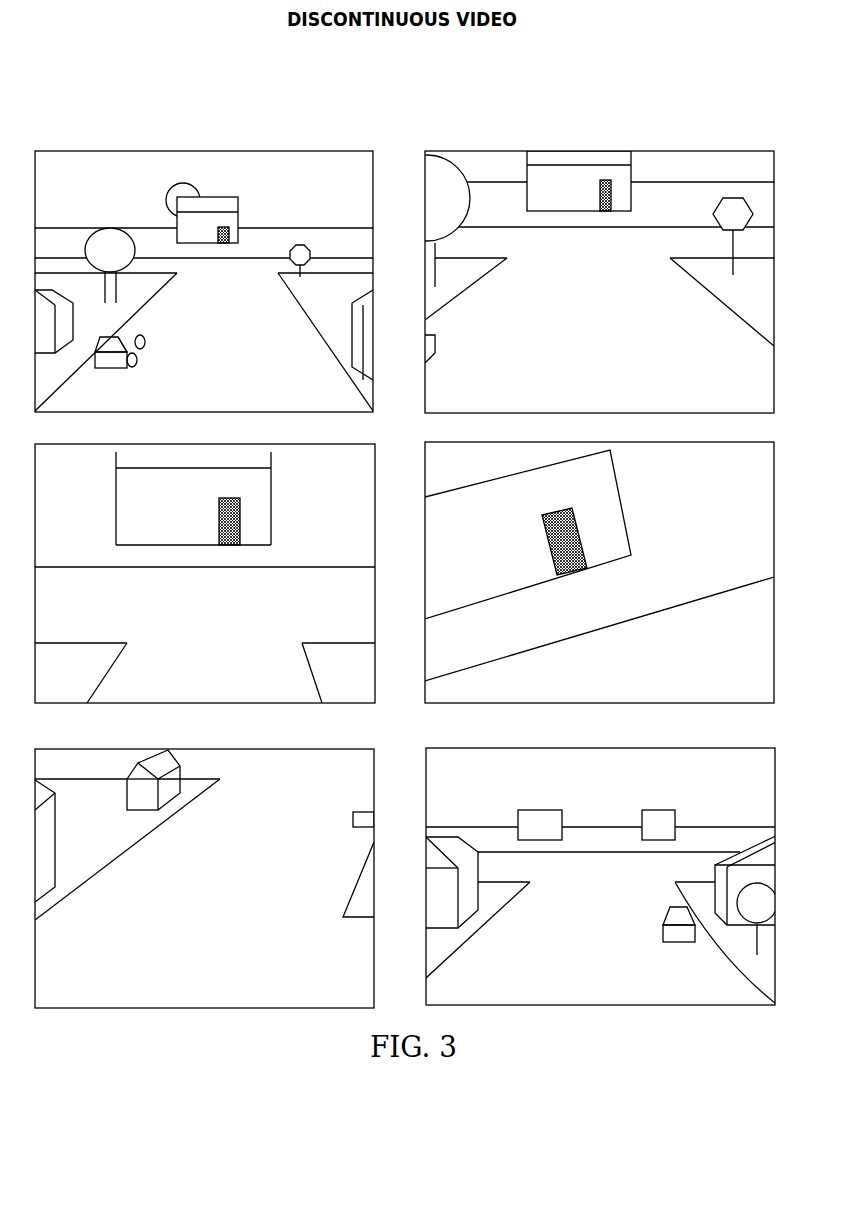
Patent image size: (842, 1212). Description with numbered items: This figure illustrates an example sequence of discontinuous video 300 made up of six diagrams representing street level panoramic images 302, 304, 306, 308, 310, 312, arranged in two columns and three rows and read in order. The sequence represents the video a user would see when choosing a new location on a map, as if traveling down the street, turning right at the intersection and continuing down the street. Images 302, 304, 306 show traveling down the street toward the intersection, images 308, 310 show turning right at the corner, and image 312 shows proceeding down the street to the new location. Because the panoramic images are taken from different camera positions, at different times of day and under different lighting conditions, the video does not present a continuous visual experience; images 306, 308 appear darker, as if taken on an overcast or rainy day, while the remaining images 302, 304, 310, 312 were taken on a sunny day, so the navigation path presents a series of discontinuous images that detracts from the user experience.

The discontinuous video 300 is at (218, 108).
The panoramic image 302 is at (204, 281).
The panoramic image 304 is at (579, 282).
The panoramic image 306 is at (205, 573).
The panoramic image 308 is at (599, 572).
The panoramic image 310 is at (204, 878).
The panoramic image 312 is at (603, 876).